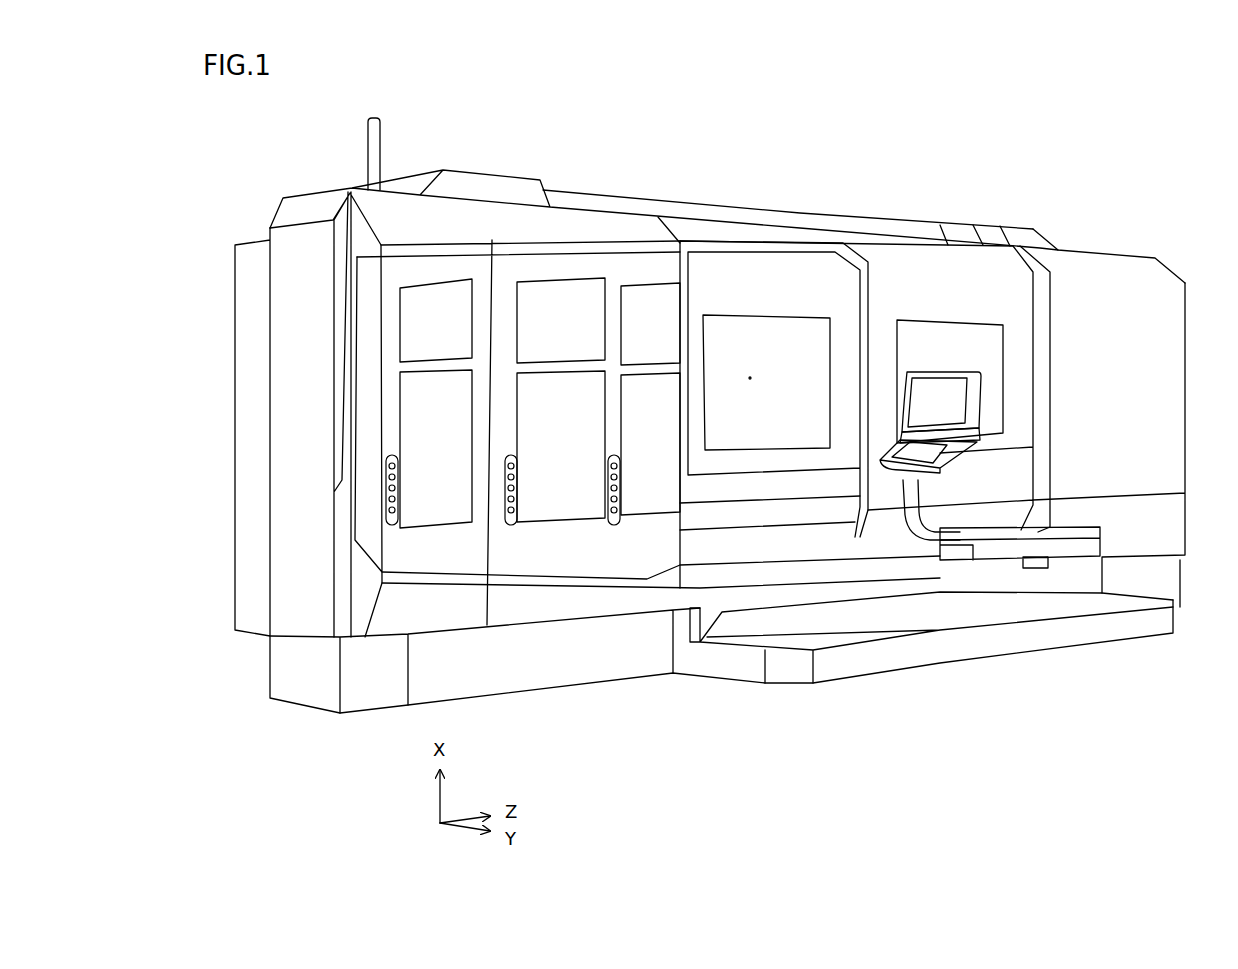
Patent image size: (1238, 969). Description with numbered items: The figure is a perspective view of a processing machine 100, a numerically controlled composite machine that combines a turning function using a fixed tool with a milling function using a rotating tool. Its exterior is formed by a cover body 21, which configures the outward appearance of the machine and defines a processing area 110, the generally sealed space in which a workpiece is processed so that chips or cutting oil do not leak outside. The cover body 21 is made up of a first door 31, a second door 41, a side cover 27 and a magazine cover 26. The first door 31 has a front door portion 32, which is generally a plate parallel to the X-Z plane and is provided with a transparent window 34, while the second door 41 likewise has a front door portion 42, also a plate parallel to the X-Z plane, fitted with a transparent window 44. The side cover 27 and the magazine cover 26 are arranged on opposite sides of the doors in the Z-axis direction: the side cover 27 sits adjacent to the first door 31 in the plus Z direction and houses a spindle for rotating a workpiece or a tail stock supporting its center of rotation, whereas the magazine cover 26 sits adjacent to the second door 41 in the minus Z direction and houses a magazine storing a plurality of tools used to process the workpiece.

The processing machine 100 is at (1152, 158).
The cover body 21 is at (1179, 261).
The magazine cover 26 is at (598, 222).
The side cover 27 is at (1105, 265).
The first door 31 is at (1000, 287).
The front door portion 32 is at (993, 445).
The transparent window 34 is at (982, 349).
The second door 41 is at (736, 275).
The front door portion 42 is at (800, 470).
The transparent window 44 is at (740, 428).
The processing area 110 is at (750, 378).